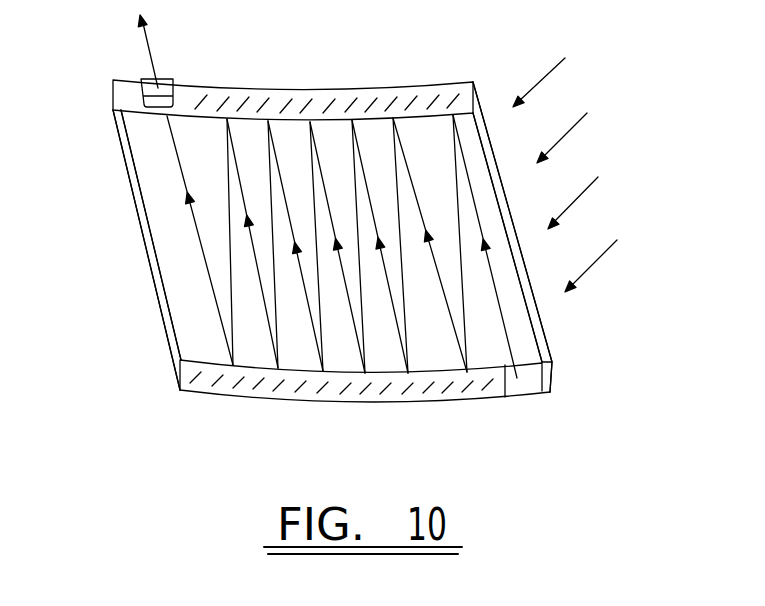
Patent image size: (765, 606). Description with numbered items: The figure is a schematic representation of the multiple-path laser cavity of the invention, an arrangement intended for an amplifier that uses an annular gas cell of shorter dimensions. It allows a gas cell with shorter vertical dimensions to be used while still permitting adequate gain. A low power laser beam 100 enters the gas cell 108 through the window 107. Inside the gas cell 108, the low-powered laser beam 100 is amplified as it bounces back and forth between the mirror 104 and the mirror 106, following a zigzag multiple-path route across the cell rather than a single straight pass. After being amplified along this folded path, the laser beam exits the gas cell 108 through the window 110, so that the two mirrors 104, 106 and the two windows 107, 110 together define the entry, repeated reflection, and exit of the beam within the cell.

The low power laser beam 100 is at (523, 395).
The mirror 104 is at (488, 394).
The mirror 106 is at (465, 106).
The window 107 is at (543, 395).
The gas cell 108 is at (154, 288).
The window 110 is at (152, 90).